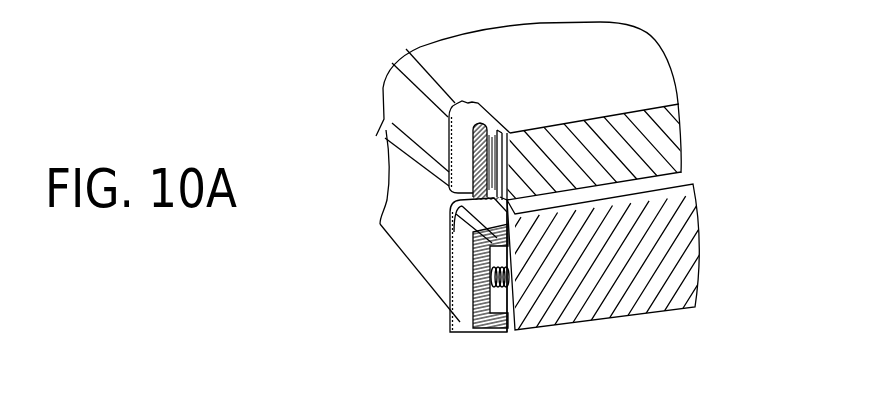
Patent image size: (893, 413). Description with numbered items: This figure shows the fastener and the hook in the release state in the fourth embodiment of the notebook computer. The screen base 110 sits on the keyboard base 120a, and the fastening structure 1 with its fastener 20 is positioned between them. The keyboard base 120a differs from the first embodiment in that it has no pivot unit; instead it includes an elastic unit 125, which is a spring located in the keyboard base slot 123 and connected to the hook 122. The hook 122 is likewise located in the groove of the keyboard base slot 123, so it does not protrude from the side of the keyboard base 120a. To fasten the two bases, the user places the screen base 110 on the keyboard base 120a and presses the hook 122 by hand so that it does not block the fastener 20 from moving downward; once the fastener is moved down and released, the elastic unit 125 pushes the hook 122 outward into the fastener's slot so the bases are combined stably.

The fastening structure 1 is at (486, 102).
The screen base 110 is at (657, 67).
The keyboard base 120a is at (393, 162).
The fastener 20 is at (462, 189).
The hook 122 is at (460, 291).
The keyboard base slot 123 is at (432, 265).
The elastic unit 125 is at (513, 305).